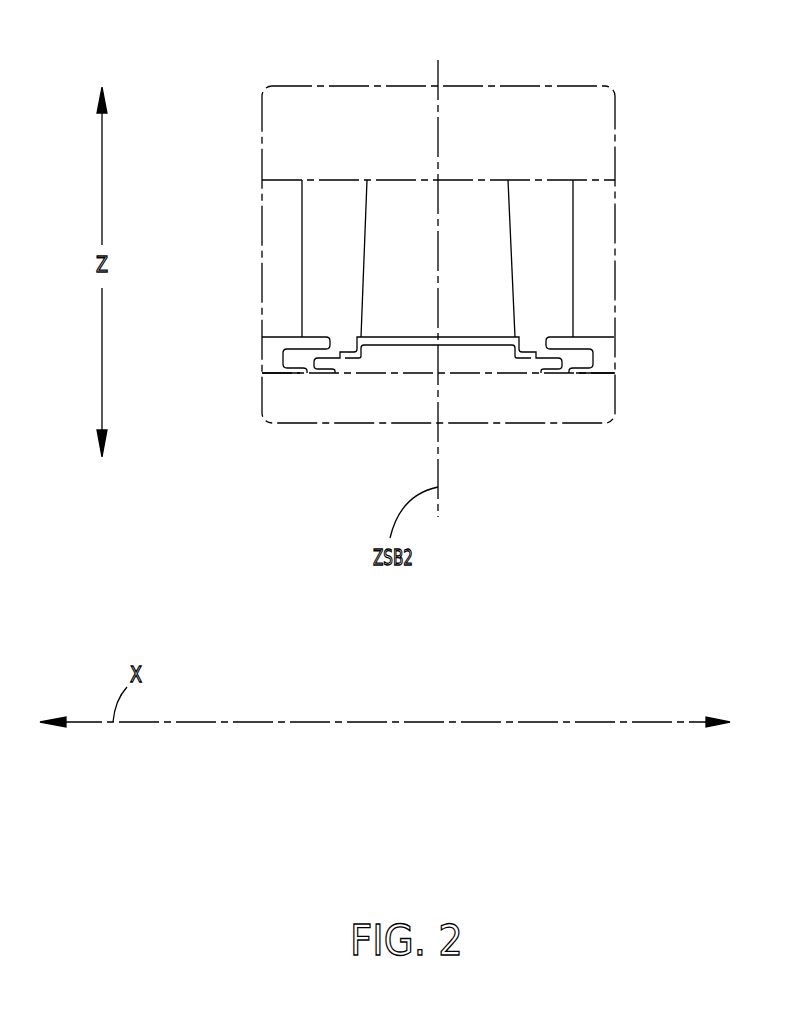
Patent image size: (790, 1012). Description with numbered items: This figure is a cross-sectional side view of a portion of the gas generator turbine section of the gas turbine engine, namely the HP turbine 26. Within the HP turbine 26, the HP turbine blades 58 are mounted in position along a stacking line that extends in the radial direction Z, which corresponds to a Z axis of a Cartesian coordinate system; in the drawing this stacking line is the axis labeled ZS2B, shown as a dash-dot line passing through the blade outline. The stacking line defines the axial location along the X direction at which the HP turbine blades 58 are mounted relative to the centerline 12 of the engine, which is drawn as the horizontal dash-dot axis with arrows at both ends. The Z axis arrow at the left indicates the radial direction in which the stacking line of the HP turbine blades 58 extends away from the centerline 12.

The centerline 12 is at (593, 722).
The HP turbine 26 is at (600, 262).
The HP turbine blades 58 is at (477, 180).